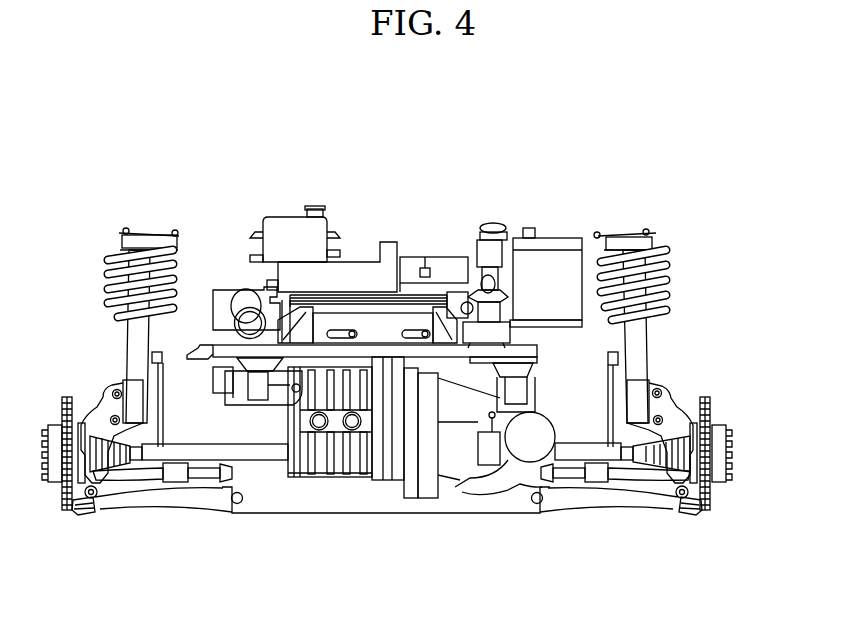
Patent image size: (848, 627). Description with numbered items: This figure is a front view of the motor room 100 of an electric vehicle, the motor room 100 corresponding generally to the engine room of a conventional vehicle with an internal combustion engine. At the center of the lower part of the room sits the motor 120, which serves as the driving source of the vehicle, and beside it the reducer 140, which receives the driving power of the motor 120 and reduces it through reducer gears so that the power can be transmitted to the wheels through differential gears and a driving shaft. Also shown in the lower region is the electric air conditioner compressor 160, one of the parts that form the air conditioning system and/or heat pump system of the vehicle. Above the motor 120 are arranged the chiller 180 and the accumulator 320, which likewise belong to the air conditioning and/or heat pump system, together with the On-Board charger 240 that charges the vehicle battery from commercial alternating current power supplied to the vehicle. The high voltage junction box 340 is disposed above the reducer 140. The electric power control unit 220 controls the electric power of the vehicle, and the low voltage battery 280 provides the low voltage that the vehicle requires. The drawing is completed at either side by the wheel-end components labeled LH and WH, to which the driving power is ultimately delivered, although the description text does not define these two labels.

The motor room 100 is at (408, 222).
The motor 120 is at (320, 582).
The reducer 140 is at (430, 570).
The electric air conditioner compressor 160 is at (513, 533).
The chiller 180 is at (192, 546).
The electric power control unit (EPCU) 220 is at (365, 313).
The On-Board charger (OBC) 240 is at (352, 257).
The low voltage battery 280 is at (550, 270).
The accumulator 320 is at (227, 300).
The high voltage junction box 340 is at (440, 257).
The left wheel hub LH is at (42, 562).
The wheel hub WH is at (725, 537).